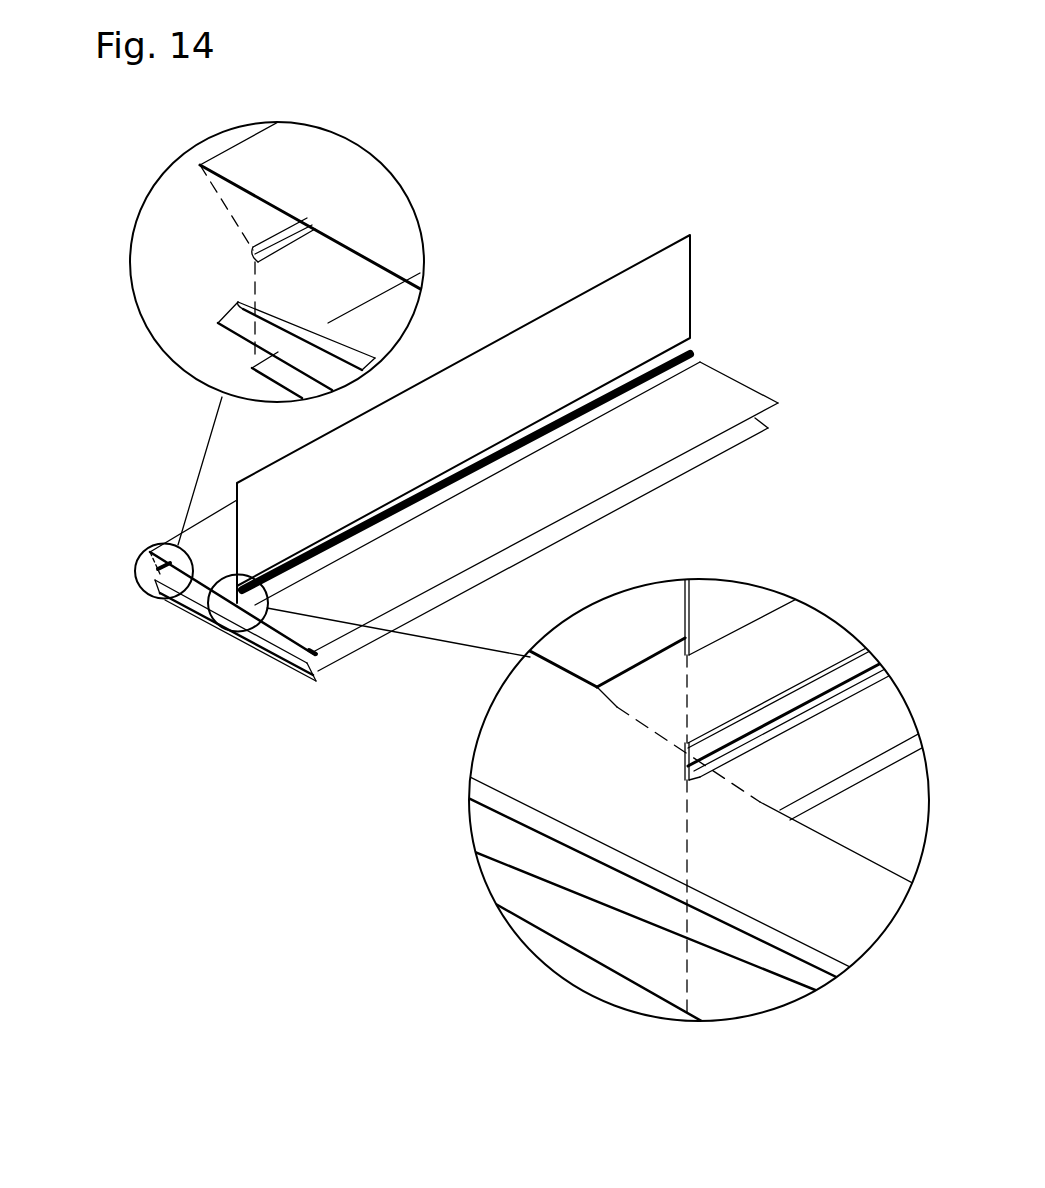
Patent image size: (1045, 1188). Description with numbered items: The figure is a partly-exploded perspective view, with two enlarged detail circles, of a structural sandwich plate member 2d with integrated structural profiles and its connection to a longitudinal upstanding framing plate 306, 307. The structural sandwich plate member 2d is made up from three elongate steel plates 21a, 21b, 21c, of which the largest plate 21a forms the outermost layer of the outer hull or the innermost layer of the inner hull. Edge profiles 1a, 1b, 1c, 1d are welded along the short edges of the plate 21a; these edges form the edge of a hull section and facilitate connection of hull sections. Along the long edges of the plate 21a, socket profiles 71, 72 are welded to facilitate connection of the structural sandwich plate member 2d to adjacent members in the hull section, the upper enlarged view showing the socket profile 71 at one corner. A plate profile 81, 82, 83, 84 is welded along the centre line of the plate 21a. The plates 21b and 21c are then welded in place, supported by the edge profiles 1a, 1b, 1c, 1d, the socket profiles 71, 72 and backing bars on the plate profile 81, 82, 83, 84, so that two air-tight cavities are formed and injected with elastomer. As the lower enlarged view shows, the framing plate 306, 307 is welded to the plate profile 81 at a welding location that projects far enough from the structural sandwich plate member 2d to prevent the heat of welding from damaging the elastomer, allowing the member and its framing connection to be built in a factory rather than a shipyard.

The structural sandwich plate member 2d is at (116, 514).
The steel plate 21a is at (333, 192).
The steel plate 21b is at (177, 543).
The steel plate 21c is at (750, 385).
The longitudinal framing plate 306 is at (568, 625).
The longitudinal framing plate 307 is at (692, 292).
The socket profile 71 is at (253, 252).
The socket profile 72 is at (314, 668).
The plate profile 81 is at (571, 574).
The plate profile 82 is at (571, 574).
The plate profile 83 is at (571, 574).
The plate profile 84 is at (687, 778).
The edge profile 1a is at (236, 638).
The edge profile 1b is at (236, 638).
The edge profile 1c is at (236, 638).
The edge profile 1d is at (270, 653).